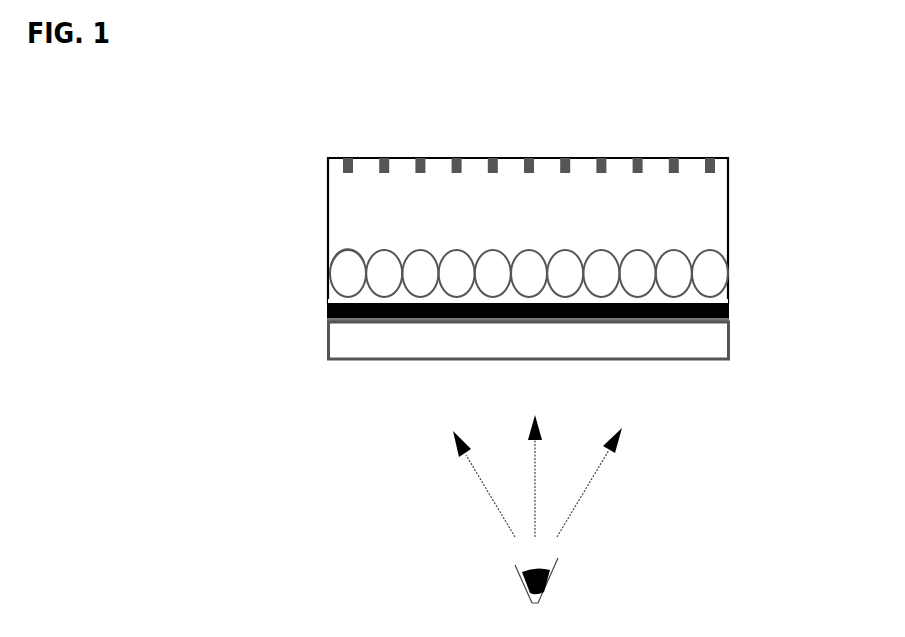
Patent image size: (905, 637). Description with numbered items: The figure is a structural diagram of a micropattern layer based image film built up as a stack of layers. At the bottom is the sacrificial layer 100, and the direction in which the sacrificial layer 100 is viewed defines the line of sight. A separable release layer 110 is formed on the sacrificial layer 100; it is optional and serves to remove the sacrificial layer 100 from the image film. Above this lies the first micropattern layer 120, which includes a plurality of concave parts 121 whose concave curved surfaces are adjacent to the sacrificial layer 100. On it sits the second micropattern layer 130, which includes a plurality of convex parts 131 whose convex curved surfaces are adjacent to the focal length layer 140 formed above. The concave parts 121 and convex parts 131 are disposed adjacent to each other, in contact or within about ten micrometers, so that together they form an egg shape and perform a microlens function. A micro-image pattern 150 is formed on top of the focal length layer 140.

The sacrificial layer 100 is at (722, 345).
The separable release layer 110 is at (729, 310).
The first micropattern layer 120 is at (337, 299).
The concave part 121 is at (713, 268).
The second micropattern layer 130 is at (338, 268).
The convex part 131 is at (350, 253).
The focal length layer 140 is at (714, 212).
The micro-image pattern 150 is at (673, 159).